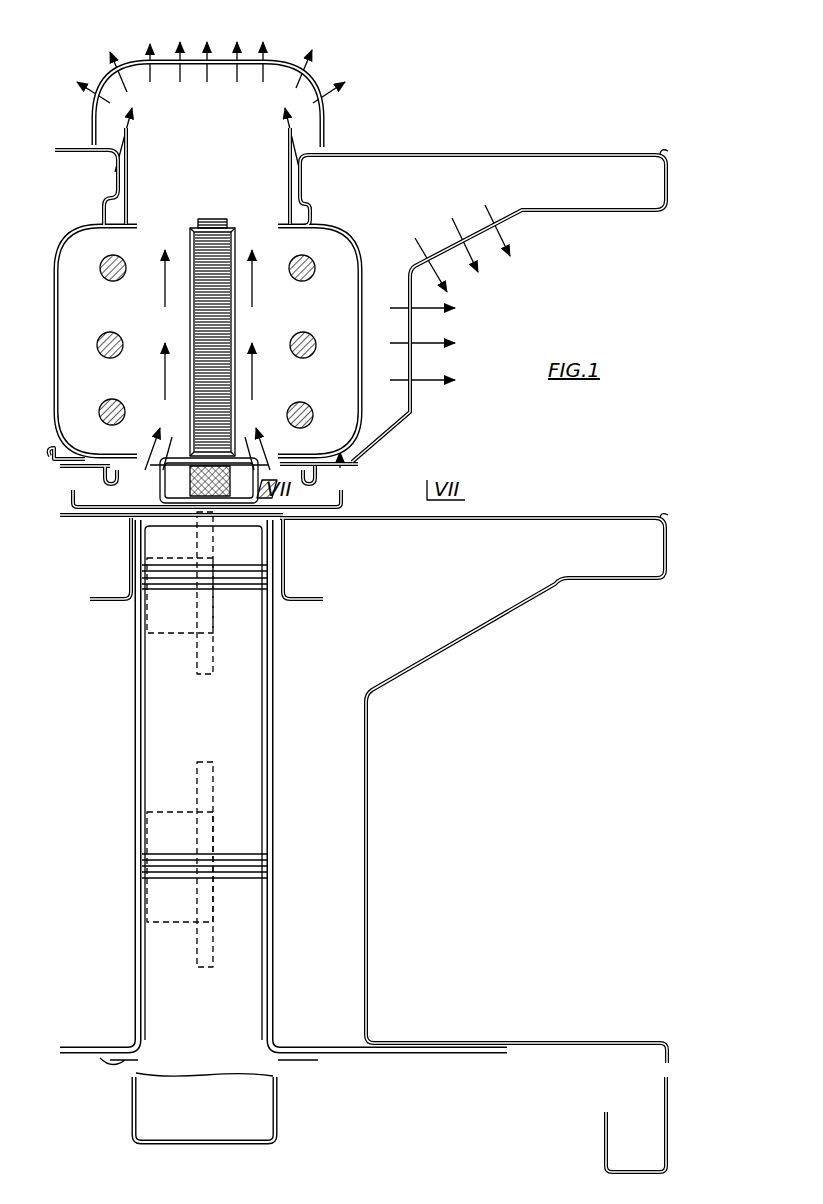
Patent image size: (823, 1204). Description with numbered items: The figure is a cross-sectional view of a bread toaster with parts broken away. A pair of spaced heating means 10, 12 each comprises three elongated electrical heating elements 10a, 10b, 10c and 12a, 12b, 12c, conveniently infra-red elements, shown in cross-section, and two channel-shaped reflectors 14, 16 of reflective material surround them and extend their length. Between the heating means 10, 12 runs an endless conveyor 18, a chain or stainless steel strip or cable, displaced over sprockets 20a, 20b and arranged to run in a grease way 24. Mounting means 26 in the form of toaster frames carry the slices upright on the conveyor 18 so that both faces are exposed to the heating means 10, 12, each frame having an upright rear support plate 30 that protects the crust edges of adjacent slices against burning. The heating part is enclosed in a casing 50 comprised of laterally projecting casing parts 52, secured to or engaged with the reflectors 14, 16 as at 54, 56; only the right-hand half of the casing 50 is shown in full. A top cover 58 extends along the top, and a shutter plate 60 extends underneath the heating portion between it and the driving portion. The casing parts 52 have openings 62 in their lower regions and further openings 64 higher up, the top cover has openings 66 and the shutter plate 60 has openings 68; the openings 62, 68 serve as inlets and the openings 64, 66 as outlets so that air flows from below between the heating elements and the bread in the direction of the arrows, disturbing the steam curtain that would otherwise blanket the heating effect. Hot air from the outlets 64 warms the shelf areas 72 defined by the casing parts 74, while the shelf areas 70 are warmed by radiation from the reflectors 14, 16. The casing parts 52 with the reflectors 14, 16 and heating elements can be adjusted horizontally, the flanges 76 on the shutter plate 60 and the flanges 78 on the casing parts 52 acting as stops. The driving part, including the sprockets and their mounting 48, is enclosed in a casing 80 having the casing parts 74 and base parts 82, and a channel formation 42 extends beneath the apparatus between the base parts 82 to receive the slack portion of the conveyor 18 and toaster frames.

The heating means 10 is at (88, 326).
The heating element 10a is at (108, 277).
The heating element 10b is at (100, 349).
The heating element 10c is at (100, 412).
The heating means 12 is at (325, 322).
The heating element 12a is at (309, 276).
The heating element 12b is at (314, 347).
The heating element 12c is at (309, 415).
The reflector 14 is at (54, 370).
The reflector 16 is at (352, 262).
The endless conveyor 18 is at (128, 488).
The sprocket 20a is at (202, 627).
The sprocket 20b is at (204, 926).
The grease way 24 is at (220, 500).
The mounting means 26 is at (208, 219).
The rear support plate 30 is at (216, 340).
The channel formation 42 is at (276, 1100).
The mounting 48 is at (273, 776).
The casing 50 is at (580, 212).
The casing part 52 is at (80, 153).
The engagement of casing part with reflector 54 is at (102, 211).
The engagement of casing part with reflector 56 is at (108, 472).
The top cover 58 is at (323, 125).
The shutter plate 60 is at (302, 500).
The opening 62 is at (72, 458).
The opening 64 is at (458, 246).
The opening 66 is at (240, 68).
The opening 68 is at (114, 494).
The shelf area 70 is at (505, 155).
The shelf area 72 is at (505, 522).
The casing part 74 is at (420, 664).
The flange 76 is at (80, 509).
The flange 78 is at (113, 479).
The casing 80 is at (392, 823).
The base part 82 is at (478, 1043).